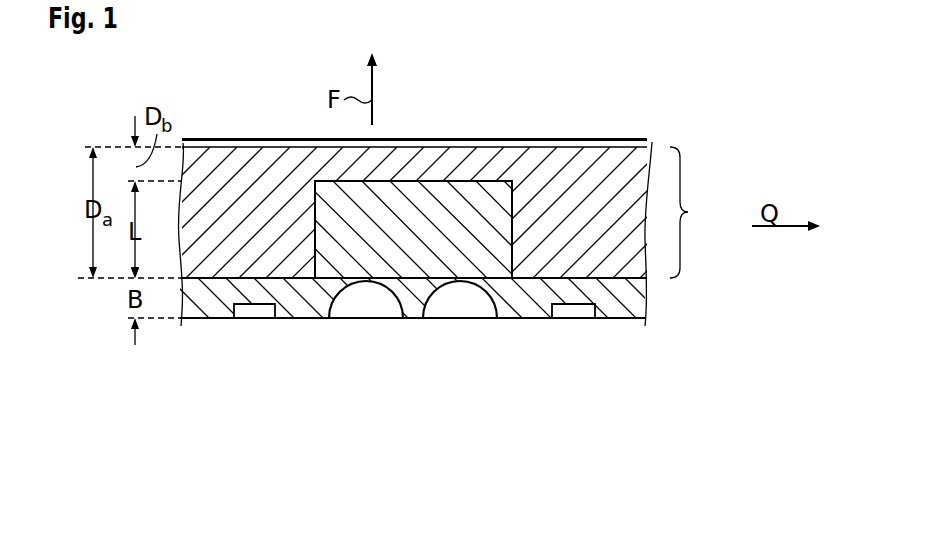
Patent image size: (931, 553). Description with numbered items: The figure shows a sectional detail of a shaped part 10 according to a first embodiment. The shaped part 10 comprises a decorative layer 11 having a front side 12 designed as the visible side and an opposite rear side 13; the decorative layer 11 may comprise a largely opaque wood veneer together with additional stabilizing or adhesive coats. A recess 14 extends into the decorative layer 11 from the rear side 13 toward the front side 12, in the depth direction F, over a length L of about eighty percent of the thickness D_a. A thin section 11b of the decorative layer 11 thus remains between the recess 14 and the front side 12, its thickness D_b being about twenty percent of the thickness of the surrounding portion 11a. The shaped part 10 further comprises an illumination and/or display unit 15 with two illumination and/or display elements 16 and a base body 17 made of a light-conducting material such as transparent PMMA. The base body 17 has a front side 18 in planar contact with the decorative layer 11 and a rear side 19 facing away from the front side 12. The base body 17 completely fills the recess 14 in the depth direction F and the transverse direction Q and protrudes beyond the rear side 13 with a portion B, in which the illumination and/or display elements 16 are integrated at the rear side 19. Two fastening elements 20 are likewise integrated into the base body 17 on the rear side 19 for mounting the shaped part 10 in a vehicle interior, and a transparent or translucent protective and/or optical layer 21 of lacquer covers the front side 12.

The shaped part 10 is at (629, 66).
The decorative layer 11 is at (411, 234).
The portion of the decorative layer surrounding the recess 11a is at (255, 222).
The section of the decorative layer 11b is at (416, 166).
The front side 12 is at (638, 136).
The rear side 13 is at (620, 282).
The recess 14 is at (450, 176).
The illumination and/or display unit 15 is at (324, 360).
The illumination and/or display elements 16 is at (448, 300).
The base body 17 is at (453, 267).
The front side of the base body 18 is at (211, 258).
The rear side of the base body 19 is at (620, 322).
The fastening elements 20 is at (574, 308).
The protective and/or optical layer 21 is at (553, 142).